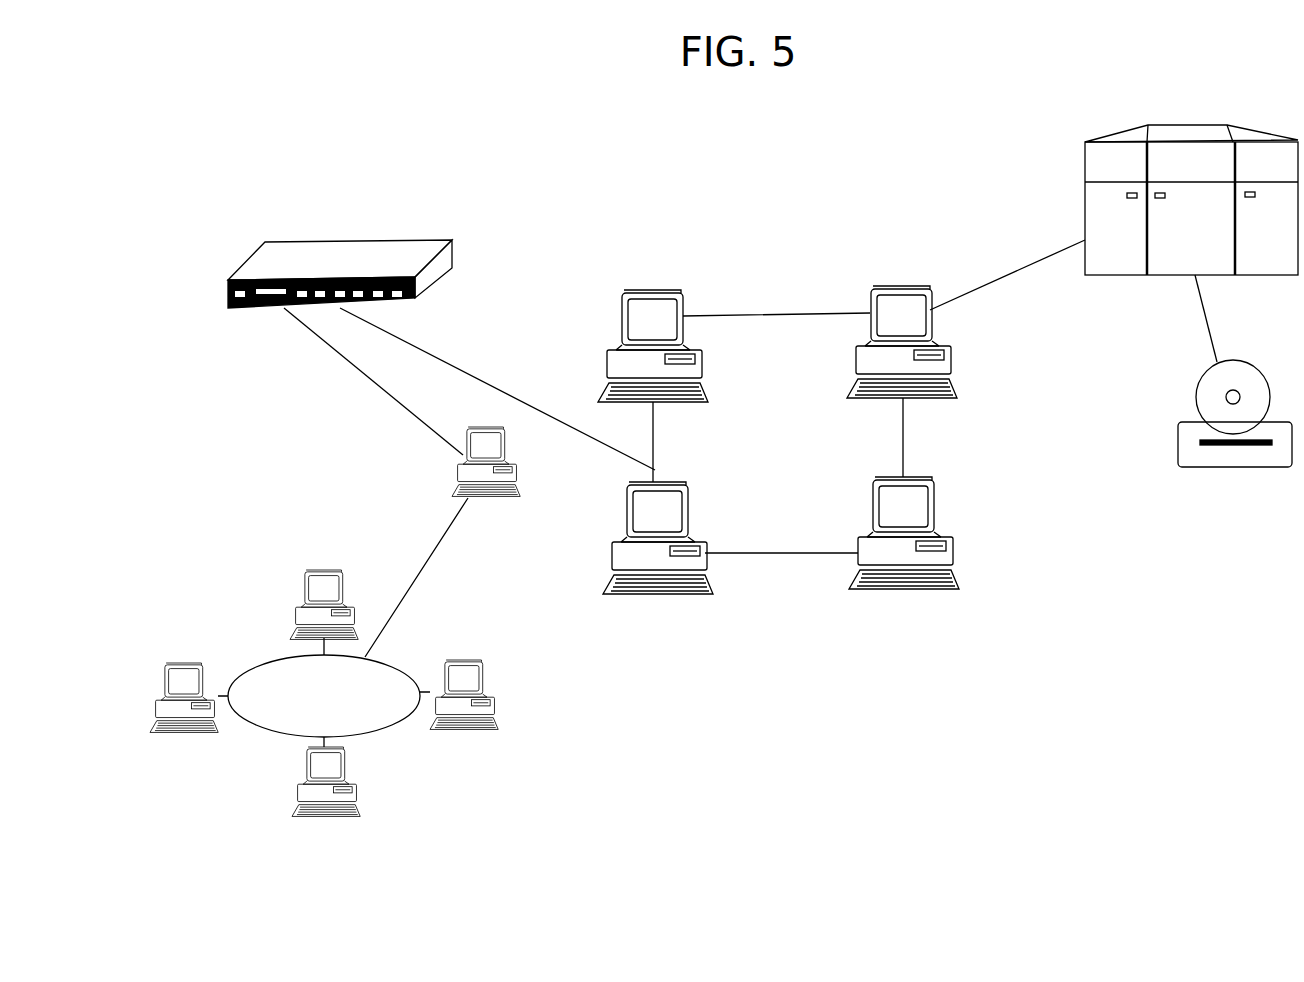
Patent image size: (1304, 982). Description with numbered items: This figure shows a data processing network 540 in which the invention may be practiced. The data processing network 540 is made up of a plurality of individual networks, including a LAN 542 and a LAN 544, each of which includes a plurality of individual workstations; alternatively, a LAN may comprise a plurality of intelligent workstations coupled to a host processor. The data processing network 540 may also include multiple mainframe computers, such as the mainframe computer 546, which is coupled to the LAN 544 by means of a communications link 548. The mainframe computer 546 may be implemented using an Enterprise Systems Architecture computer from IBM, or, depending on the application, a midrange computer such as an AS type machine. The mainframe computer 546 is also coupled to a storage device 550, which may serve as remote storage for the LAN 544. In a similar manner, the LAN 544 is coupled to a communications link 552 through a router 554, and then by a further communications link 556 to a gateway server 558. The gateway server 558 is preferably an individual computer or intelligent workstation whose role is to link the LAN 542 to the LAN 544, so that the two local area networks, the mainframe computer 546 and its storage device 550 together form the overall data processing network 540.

The data processing network 540 is at (755, 160).
The LAN 542 is at (343, 622).
The LAN 544 is at (778, 433).
The mainframe computer 546 is at (1085, 165).
The communications link 548 is at (1060, 250).
The storage device 550 is at (1178, 440).
The communications link 552 is at (420, 348).
The router 554 is at (337, 240).
The communications link 556 is at (302, 323).
The gateway server 558 is at (522, 462).